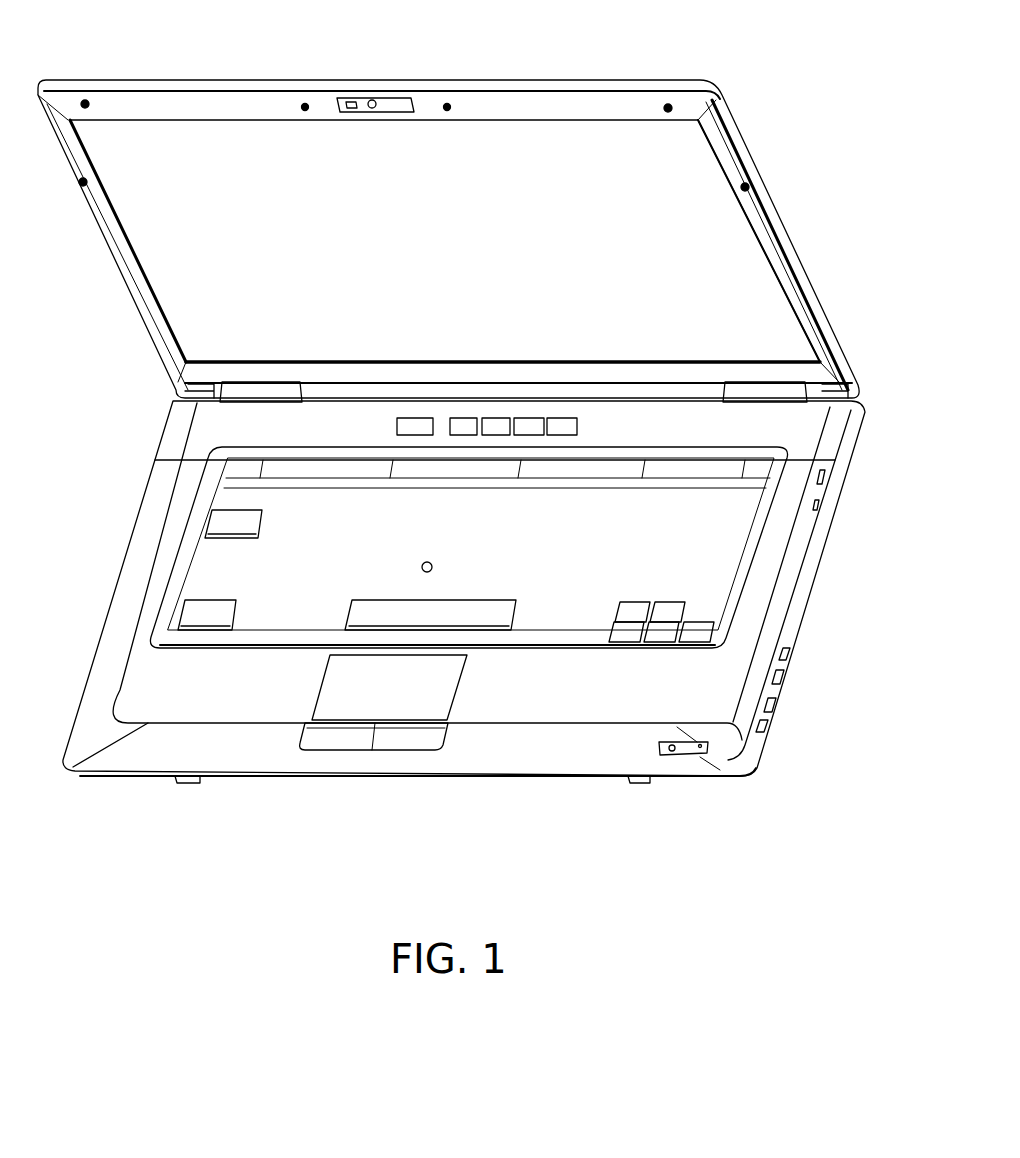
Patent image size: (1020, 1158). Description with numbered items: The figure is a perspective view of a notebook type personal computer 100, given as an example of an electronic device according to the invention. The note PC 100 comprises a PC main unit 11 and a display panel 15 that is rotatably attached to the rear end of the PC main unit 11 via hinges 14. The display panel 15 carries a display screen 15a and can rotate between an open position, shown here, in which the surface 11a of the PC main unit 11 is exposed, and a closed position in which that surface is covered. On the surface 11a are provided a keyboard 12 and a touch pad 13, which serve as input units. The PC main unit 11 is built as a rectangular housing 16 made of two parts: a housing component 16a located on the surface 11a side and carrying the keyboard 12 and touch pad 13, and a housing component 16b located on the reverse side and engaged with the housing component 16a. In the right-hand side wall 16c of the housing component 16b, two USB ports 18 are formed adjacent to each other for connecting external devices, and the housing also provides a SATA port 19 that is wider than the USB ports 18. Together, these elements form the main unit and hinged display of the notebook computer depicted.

The notebook type personal computer 100 is at (652, 70).
The PC main unit 11 is at (120, 522).
The surface 11a is at (495, 707).
The keyboard 12 is at (693, 553).
The touch pad 13 is at (330, 688).
The hinges 14 is at (257, 378).
The display panel 15 is at (100, 268).
The display screen 15a is at (452, 251).
The housing 16 is at (623, 843).
The housing component 16a is at (603, 750).
The housing component 16b is at (560, 780).
The right-hand side wall 16c is at (797, 622).
The USB port 18 is at (168, 423).
The SATA port 19 is at (165, 438).